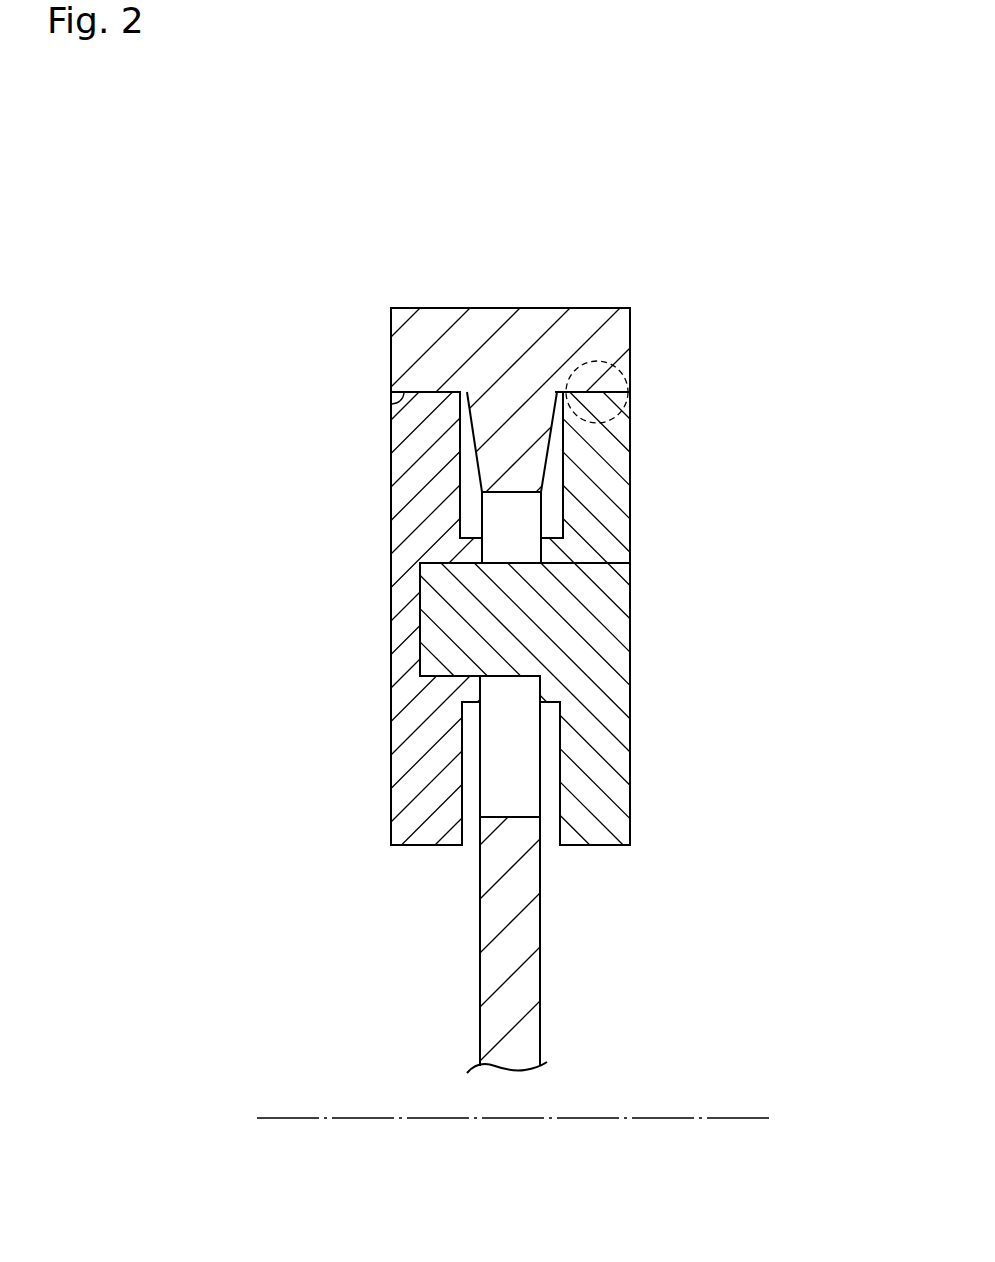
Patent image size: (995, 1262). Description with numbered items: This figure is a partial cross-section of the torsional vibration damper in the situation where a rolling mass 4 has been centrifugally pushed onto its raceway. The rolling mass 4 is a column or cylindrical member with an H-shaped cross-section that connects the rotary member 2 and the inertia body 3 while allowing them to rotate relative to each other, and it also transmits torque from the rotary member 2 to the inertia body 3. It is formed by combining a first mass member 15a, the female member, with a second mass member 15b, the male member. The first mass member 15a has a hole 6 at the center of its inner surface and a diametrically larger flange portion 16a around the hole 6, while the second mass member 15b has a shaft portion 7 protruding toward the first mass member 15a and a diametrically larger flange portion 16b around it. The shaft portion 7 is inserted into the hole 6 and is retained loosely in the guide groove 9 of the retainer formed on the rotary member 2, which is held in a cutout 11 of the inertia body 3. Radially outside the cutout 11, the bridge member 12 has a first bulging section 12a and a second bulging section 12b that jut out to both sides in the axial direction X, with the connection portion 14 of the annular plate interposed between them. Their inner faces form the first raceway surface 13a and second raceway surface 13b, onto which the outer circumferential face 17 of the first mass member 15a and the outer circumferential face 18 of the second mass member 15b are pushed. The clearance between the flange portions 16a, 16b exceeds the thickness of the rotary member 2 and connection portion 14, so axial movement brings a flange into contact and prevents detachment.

The rotary member 2 is at (523, 955).
The inertia body 3 is at (615, 285).
The rolling mass 4 is at (647, 663).
The hole 6 is at (457, 693).
The shaft portion 7 is at (492, 605).
The guide groove 9 is at (520, 773).
The cutout 11 is at (497, 533).
The bridge member 12 is at (408, 234).
The first bulging section 12a is at (433, 322).
The second bulging section 12b is at (578, 330).
The first raceway surface 13a is at (397, 402).
The second raceway surface 13b is at (596, 414).
The connection portion 14 is at (505, 462).
The first mass member 15a is at (330, 688).
The second mass member 15b is at (710, 500).
The flange portion 16a is at (426, 806).
The flange portion 16b is at (598, 508).
The outer circumferential face 17 is at (349, 408).
The outer circumferential face 18 is at (668, 403).
The axial direction X is at (733, 1112).